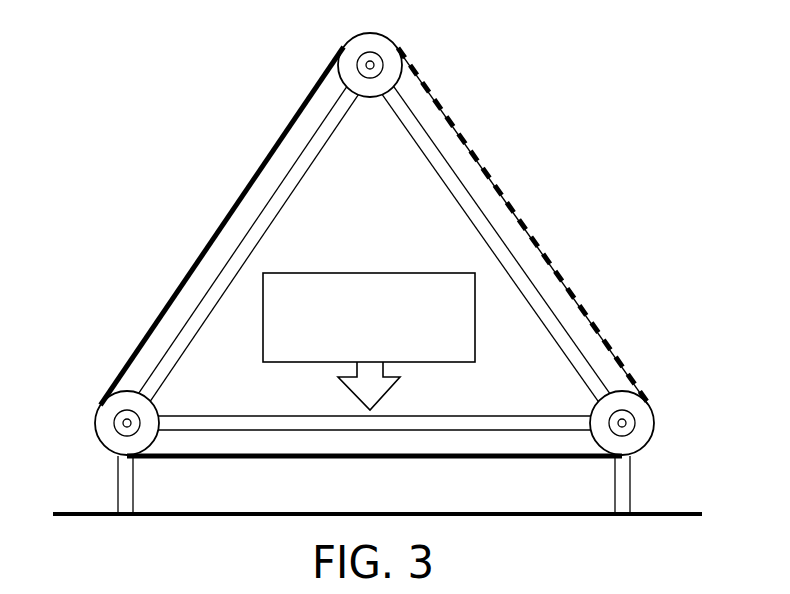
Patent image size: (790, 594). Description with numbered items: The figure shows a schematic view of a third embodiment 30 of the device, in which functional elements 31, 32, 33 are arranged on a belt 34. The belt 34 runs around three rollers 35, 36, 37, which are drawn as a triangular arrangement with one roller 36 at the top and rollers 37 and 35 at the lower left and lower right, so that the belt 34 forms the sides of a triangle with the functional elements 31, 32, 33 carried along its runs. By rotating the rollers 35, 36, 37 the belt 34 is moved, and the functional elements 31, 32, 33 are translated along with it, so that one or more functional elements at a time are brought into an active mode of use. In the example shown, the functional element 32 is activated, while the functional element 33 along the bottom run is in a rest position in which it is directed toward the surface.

The embodiment 30 is at (375, 265).
The functional element 31 is at (505, 201).
The functional element 32 is at (238, 197).
The functional element 33 is at (392, 461).
The belt 34 is at (591, 325).
The roller 35 is at (650, 424).
The roller 36 is at (384, 45).
The roller 37 is at (104, 425).